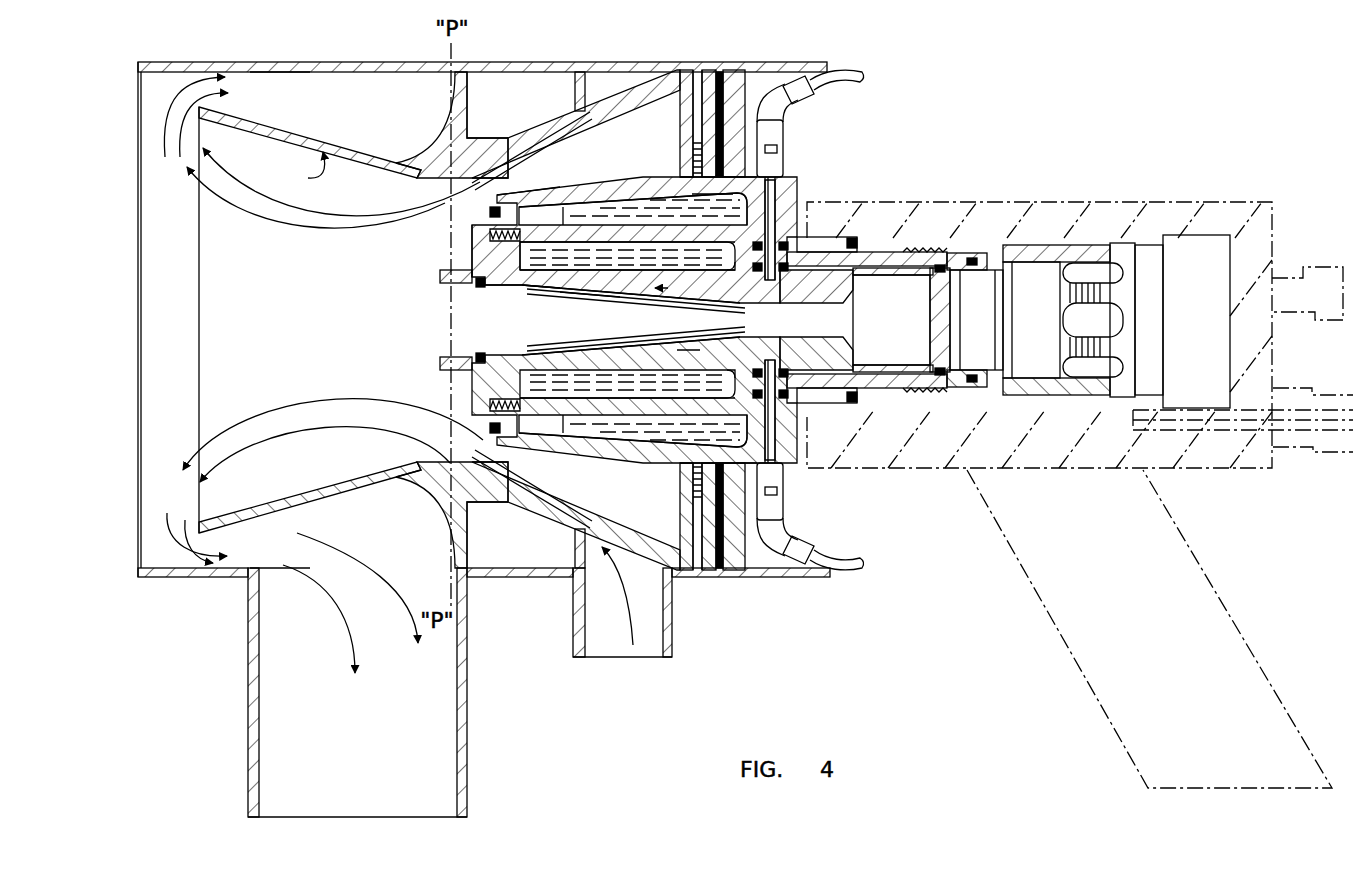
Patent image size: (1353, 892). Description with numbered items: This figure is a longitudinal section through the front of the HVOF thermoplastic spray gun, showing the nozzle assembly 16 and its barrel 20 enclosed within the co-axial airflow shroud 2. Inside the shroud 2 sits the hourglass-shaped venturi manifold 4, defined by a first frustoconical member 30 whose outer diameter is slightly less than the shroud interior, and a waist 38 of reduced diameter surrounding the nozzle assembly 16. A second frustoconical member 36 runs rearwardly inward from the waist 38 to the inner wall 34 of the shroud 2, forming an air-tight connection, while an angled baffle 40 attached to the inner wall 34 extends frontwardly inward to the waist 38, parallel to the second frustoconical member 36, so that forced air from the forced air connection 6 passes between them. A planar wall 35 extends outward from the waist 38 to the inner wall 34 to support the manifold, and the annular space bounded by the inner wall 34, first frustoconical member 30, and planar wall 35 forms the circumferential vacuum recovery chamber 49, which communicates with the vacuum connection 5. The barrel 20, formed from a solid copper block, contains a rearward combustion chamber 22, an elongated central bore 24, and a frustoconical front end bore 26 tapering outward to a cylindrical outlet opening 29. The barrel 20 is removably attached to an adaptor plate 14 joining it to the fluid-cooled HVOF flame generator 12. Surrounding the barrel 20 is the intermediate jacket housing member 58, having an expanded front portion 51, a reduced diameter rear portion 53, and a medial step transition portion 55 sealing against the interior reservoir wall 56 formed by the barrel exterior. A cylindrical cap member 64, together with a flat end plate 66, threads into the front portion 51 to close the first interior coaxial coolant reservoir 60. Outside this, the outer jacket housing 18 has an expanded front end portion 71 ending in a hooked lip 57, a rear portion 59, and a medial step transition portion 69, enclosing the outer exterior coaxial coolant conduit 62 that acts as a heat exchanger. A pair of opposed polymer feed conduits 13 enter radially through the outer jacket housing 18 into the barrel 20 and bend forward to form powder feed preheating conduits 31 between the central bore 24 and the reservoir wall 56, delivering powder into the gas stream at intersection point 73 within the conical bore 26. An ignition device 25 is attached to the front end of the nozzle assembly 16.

The co-axial airflow shroud 2 is at (312, 64).
The inner wall 34 is at (302, 73).
The circumferential vacuum recovery chamber 49 is at (354, 116).
The first frustoconical member 30 is at (318, 142).
The venturi manifold 4 is at (308, 168).
The waist 38 is at (411, 171).
The planar wall 35 is at (466, 114).
The second frustoconical member 36 is at (573, 107).
The angled baffle 40 is at (528, 153).
The nozzle assembly 16 is at (633, 168).
The outer jacket housing 18 is at (662, 183).
The expanded front end portion 71 is at (567, 197).
The hooked lip 57 is at (493, 207).
The expanded front portion 51 is at (580, 228).
The outer exterior coaxial coolant conduit 62 is at (673, 222).
The cylindrical cap member 64 is at (488, 248).
The flat end plate 66 is at (462, 268).
The intermediate jacket housing member 58 is at (613, 233).
The first interior coaxial coolant reservoir 60 is at (610, 268).
The interior reservoir wall 56 is at (700, 280).
The intersection point 73 is at (527, 317).
The cylindrical outlet opening 29 is at (487, 329).
The frustoconical front end bore 26 is at (565, 329).
The powder feed preheating conduits 31 is at (653, 357).
The central bore 24 is at (758, 329).
The barrel 20 is at (787, 298).
The combustion chamber 22 is at (903, 324).
The medial step transition portion 55 is at (742, 247).
The medial step transition portion 69 is at (752, 245).
The polymer feed conduits 13 is at (782, 218).
The rear portion 59 is at (836, 240).
The reduced diameter rear portion 53 is at (878, 255).
The adaptor plate 14 is at (937, 287).
The HVOF flame generator 12 is at (1040, 292).
The ignition device 25 is at (452, 376).
The forced air connection 6 is at (645, 633).
The vacuum connection 5 is at (440, 710).